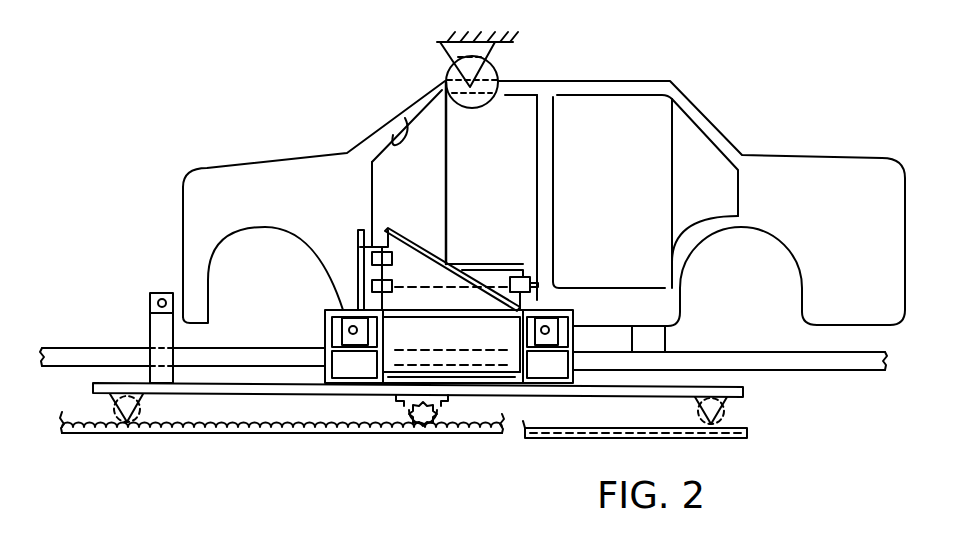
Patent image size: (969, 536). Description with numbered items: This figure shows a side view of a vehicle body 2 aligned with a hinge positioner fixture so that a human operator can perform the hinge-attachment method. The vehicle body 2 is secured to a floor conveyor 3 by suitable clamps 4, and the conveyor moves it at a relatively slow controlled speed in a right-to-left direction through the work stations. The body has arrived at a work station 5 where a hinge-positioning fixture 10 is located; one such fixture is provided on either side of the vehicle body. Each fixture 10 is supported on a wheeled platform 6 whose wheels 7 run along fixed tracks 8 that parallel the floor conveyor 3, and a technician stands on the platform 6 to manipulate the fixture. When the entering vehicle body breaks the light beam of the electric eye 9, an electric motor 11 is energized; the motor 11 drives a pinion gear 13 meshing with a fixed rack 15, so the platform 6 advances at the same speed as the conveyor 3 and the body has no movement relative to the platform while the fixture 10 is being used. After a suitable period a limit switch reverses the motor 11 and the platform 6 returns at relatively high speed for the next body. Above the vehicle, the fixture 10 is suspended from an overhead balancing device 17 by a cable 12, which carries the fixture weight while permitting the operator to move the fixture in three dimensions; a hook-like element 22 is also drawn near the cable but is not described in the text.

The vehicle body 2 is at (725, 137).
The floor conveyor 3 is at (75, 347).
The clamps 4 is at (665, 340).
The work station 5 is at (327, 442).
The wheeled platform 6 is at (242, 393).
The wheels 7 is at (727, 417).
The fixed tracks 8 is at (558, 438).
The electric eye 9 is at (158, 293).
The hinge-positioning fixture 10 is at (325, 330).
The electric motor 11 is at (403, 407).
The cable 12 is at (448, 175).
The pinion gear 13 is at (445, 417).
The fixed rack 15 is at (170, 433).
The overhead balancing device 17 is at (500, 62).
The hook 22 is at (405, 118).